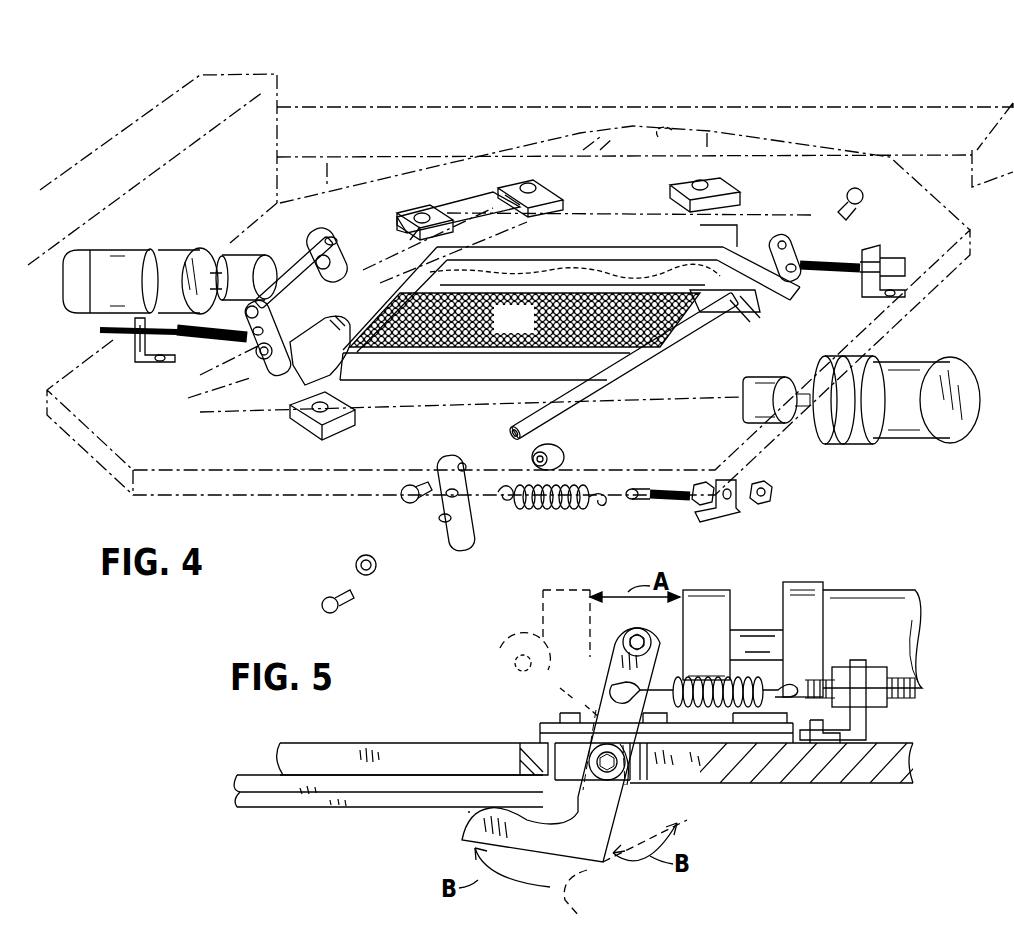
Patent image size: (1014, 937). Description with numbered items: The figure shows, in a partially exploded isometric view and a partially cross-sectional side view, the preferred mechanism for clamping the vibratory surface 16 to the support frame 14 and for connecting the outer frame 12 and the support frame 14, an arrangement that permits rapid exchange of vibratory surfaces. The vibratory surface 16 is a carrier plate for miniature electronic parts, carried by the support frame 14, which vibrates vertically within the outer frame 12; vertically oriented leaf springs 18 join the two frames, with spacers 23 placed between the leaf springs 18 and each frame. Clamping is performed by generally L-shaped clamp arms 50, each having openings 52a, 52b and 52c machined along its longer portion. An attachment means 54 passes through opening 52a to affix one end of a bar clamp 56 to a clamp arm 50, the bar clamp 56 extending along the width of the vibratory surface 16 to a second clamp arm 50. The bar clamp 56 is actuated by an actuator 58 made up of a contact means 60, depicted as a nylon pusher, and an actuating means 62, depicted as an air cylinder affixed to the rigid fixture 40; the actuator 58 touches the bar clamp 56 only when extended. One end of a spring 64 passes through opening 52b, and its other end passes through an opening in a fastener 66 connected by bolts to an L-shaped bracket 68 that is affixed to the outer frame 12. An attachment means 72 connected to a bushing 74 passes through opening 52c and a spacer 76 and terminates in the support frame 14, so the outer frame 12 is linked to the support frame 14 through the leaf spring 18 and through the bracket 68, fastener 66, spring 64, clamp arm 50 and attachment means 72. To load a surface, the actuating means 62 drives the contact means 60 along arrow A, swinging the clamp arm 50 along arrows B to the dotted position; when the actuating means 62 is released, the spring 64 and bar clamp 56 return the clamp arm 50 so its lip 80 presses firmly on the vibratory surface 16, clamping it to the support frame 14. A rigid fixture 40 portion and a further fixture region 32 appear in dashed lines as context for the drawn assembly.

In FIG. 4, the outer frame 12 is at (158, 424).
In FIG. 5, the outer frame 12 is at (755, 770).
In FIG. 4, the support frame 14 is at (600, 242).
In FIG. 5, the support frame 14 is at (665, 778).
In FIG. 4, the vibratory surface 16 is at (527, 331).
In FIG. 5, the vibratory surface 16 is at (293, 795).
In FIG. 4, the vertically oriented potential energy storing means 18 is at (483, 208).
In FIG. 5, the vertically oriented potential energy storing means 18 is at (540, 727).
In FIG. 5, the spacers 23 is at (537, 708).
In FIG. 4, the workstation panel 32 is at (655, 135).
In FIG. 4, the rigid fixture 40 is at (347, 141).
In FIG. 4, the clamp arm 50 is at (289, 394).
In FIG. 5, the clamp arm 50 is at (527, 852).
In FIG. 4, the opening 52a is at (462, 466).
In FIG. 4, the opening 52b is at (450, 494).
In FIG. 5, the opening 52b is at (612, 682).
In FIG. 4, the opening 52c is at (445, 528).
In FIG. 4, the attachment means 54 is at (404, 491).
In FIG. 5, the attachment means 54 is at (627, 630).
In FIG. 4, the bar clamp 56 is at (600, 410).
In FIG. 4, the actuator 58 is at (896, 386).
In FIG. 5, the actuator 58 is at (872, 613).
In FIG. 4, the contact means 60 is at (763, 420).
In FIG. 5, the contact means 60 is at (722, 621).
In FIG. 4, the actuating means 62 is at (883, 428).
In FIG. 5, the actuating means 62 is at (890, 642).
In FIG. 4, the spring 64 is at (553, 510).
In FIG. 5, the spring 64 is at (712, 677).
In FIG. 4, the fastener 66 is at (690, 492).
In FIG. 5, the fastener 66 is at (812, 680).
In FIG. 4, the L-shaped bracket 68 is at (755, 483).
In FIG. 5, the L-shaped bracket 68 is at (868, 722).
In FIG. 4, the attachment means 72 is at (350, 600).
In FIG. 5, the attachment means 72 is at (597, 780).
In FIG. 4, the bushing 74 is at (356, 565).
In FIG. 5, the bushing 74 is at (620, 780).
In FIG. 4, the spacer 76 is at (565, 455).
In FIG. 4, the lip 80 is at (396, 532).
In FIG. 5, the lip 80 is at (470, 810).